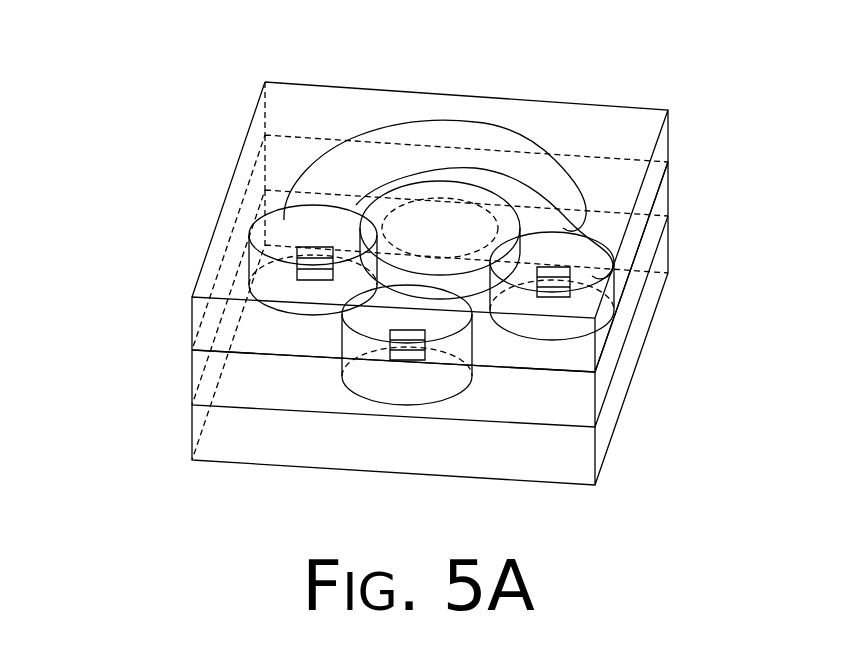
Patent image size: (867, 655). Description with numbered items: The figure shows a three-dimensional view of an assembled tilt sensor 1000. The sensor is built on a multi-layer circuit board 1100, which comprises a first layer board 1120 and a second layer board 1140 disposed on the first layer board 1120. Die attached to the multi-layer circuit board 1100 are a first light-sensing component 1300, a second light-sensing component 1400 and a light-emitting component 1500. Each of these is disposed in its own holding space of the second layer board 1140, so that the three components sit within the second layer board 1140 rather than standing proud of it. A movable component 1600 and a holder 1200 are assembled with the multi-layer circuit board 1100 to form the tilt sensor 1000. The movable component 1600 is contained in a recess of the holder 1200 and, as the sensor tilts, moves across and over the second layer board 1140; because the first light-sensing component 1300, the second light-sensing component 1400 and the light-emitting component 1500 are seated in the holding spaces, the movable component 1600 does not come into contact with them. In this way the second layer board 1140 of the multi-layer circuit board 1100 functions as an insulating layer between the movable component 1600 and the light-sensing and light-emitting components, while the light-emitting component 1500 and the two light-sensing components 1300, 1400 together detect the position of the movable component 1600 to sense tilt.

The tilt sensor 1000 is at (394, 284).
The multi-layer circuit board 1100 is at (349, 310).
The first layer board 1120 is at (225, 443).
The second layer board 1140 is at (193, 367).
The holder 1200 is at (190, 320).
The first light-sensing component 1300 is at (360, 317).
The second light-sensing component 1400 is at (600, 287).
The light-emitting component 1500 is at (360, 373).
The movable component 1600 is at (485, 190).